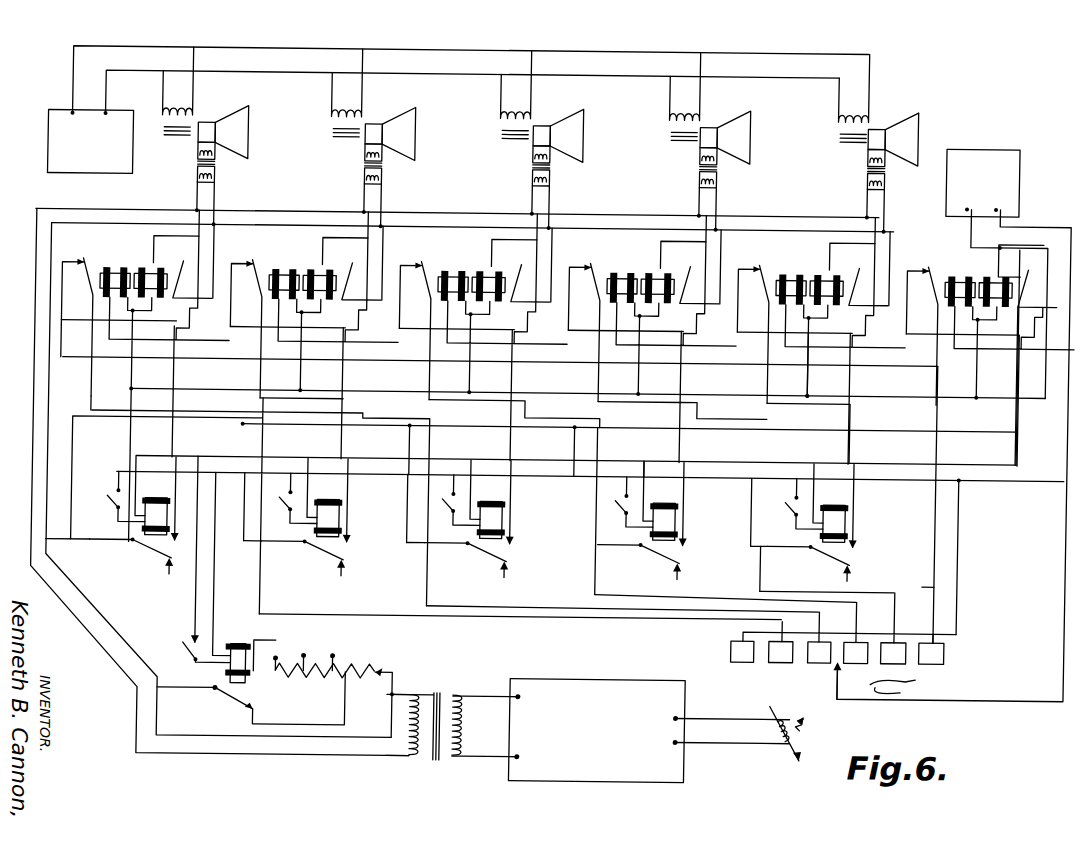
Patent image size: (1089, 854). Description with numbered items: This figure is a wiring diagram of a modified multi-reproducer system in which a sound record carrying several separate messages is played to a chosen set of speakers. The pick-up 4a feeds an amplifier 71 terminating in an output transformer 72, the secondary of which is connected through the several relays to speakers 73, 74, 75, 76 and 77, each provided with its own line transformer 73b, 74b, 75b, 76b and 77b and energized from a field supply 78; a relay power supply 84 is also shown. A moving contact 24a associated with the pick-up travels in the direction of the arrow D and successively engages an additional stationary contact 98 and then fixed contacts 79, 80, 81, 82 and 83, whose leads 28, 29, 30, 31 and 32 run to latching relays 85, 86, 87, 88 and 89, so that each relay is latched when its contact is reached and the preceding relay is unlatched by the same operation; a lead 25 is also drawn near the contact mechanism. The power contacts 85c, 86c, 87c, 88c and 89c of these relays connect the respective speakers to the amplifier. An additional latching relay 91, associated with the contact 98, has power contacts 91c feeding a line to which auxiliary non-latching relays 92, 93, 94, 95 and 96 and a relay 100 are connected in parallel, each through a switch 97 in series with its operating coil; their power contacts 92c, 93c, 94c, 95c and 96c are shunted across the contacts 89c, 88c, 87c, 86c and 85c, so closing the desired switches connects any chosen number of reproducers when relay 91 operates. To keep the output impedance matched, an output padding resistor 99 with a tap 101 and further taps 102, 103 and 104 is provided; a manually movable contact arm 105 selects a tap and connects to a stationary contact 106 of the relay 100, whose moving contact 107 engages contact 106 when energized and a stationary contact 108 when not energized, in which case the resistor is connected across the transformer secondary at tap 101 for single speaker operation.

The speaker 73 is at (222, 166).
The speaker 74 is at (389, 168).
The speaker 75 is at (557, 170).
The speaker 76 is at (724, 172).
The speaker 77 is at (892, 173).
The line transformer 73b is at (216, 172).
The line transformer 74b is at (383, 172).
The line transformer 75b is at (551, 172).
The line transformer 76b is at (718, 172).
The line transformer 77b is at (886, 172).
The field supply 78 is at (133, 170).
The relay power supply 84 is at (1010, 180).
The latching relay 85 is at (120, 264).
The latching relay 86 is at (290, 264).
The latching relay 87 is at (459, 264).
The latching relay 88 is at (628, 264).
The latching relay 89 is at (797, 264).
The additional latching relay 91 is at (958, 264).
The power contacts 85c is at (178, 262).
The power contacts 86c is at (348, 262).
The power contacts 87c is at (517, 262).
The power contacts 88c is at (686, 262).
The power contacts 89c is at (855, 262).
The power contacts 91c is at (1024, 268).
The auxiliary non-latching relay 92 is at (804, 522).
The auxiliary non-latching relay 93 is at (642, 521).
The auxiliary non-latching relay 94 is at (460, 518).
The auxiliary non-latching relay 95 is at (297, 517).
The auxiliary non-latching relay 96 is at (112, 515).
The power contacts 92c is at (850, 544).
The power contacts 93c is at (680, 542).
The power contacts 94c is at (507, 540).
The power contacts 95c is at (344, 538).
The power contacts 96c is at (172, 538).
The switch 97 is at (438, 567).
The additional stationary contact 98 is at (742, 651).
The fixed contact 79 is at (781, 652).
The fixed contact 80 is at (819, 652).
The fixed contact 81 is at (856, 652).
The fixed contact 82 is at (893, 653).
The fixed contact 83 is at (931, 653).
The output padding resistor 99 is at (382, 664).
The relay 100 is at (234, 654).
The tap 101 is at (362, 672).
The tap 102 is at (340, 655).
The tap 103 is at (303, 650).
The tap 104 is at (267, 656).
The manually movable contact arm 105 is at (320, 652).
The stationary contact 106 is at (252, 676).
The moving contact 107 is at (202, 690).
The stationary contact 108 is at (246, 715).
The amplifier 71 is at (662, 768).
The output transformer 72 is at (440, 685).
The lead 28 is at (660, 616).
The lead 29 is at (556, 602).
The lead 30 is at (648, 590).
The lead 31 is at (878, 583).
The lead 32 is at (917, 585).
The moving contact 24a is at (836, 676).
The lead 25 is at (852, 692).
The arrow D is at (902, 686).
The pick-up 4a is at (799, 734).